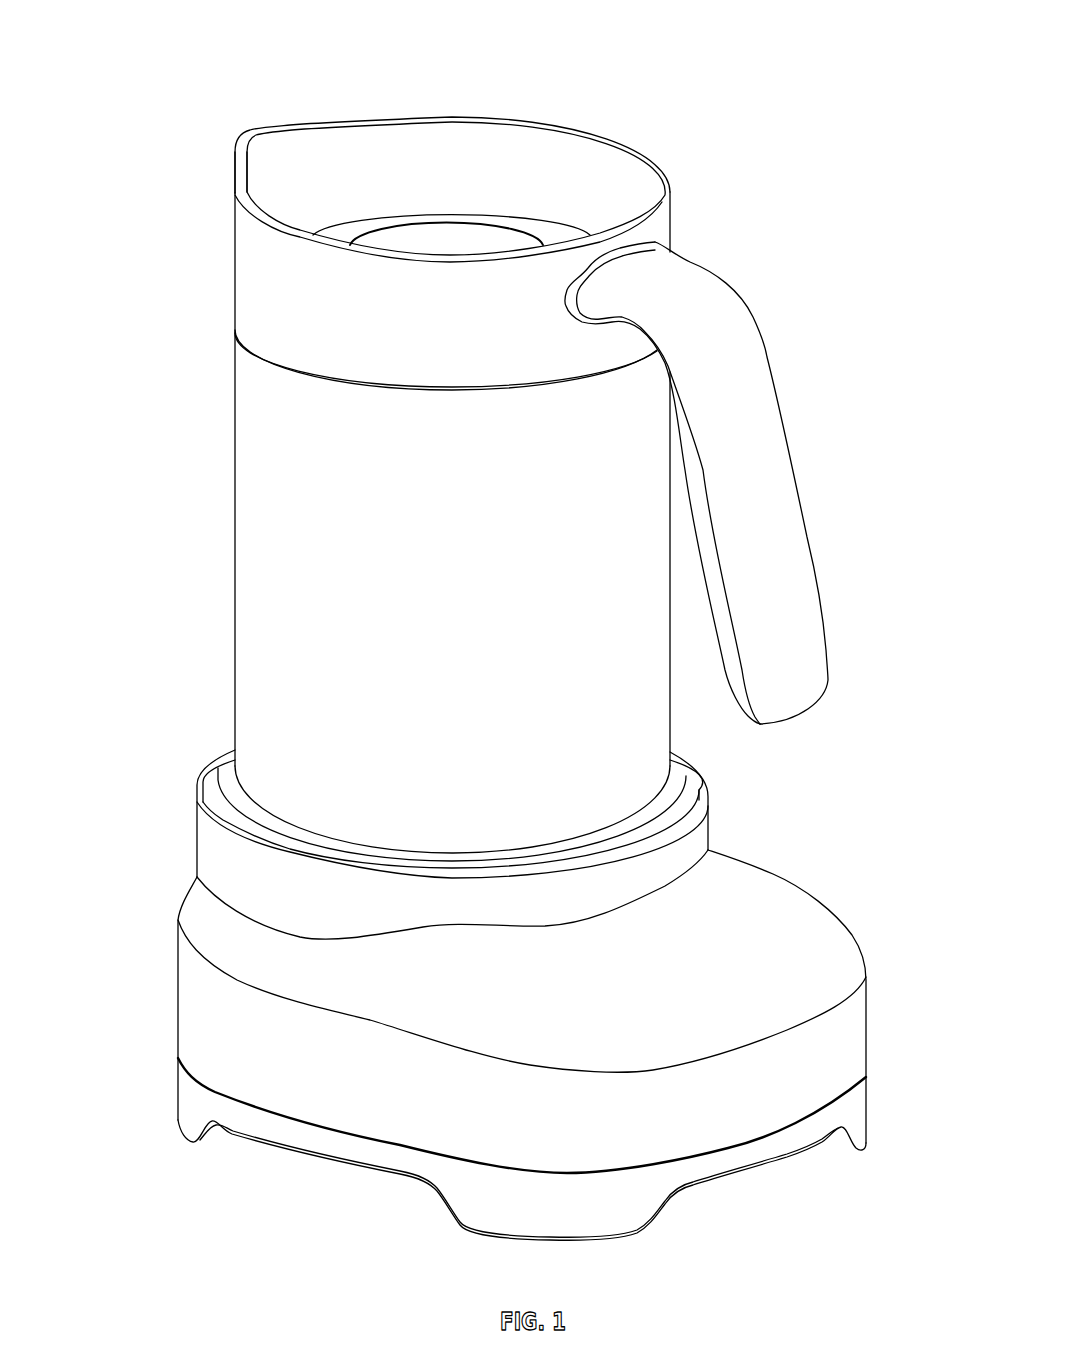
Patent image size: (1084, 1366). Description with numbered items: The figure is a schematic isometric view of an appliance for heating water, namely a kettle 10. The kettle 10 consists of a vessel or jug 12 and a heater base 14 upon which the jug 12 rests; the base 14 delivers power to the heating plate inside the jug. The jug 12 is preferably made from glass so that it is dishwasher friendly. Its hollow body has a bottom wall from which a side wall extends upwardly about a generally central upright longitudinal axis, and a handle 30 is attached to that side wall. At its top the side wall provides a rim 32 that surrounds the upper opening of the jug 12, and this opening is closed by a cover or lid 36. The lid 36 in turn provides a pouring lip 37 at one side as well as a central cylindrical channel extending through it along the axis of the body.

The kettle 10 is at (503, 620).
The jug 12 is at (366, 439).
The heater base 14 is at (245, 964).
The handle 30 is at (764, 529).
The rim 32 is at (235, 326).
The lid 36 is at (287, 269).
The pouring lip 37 is at (256, 148).